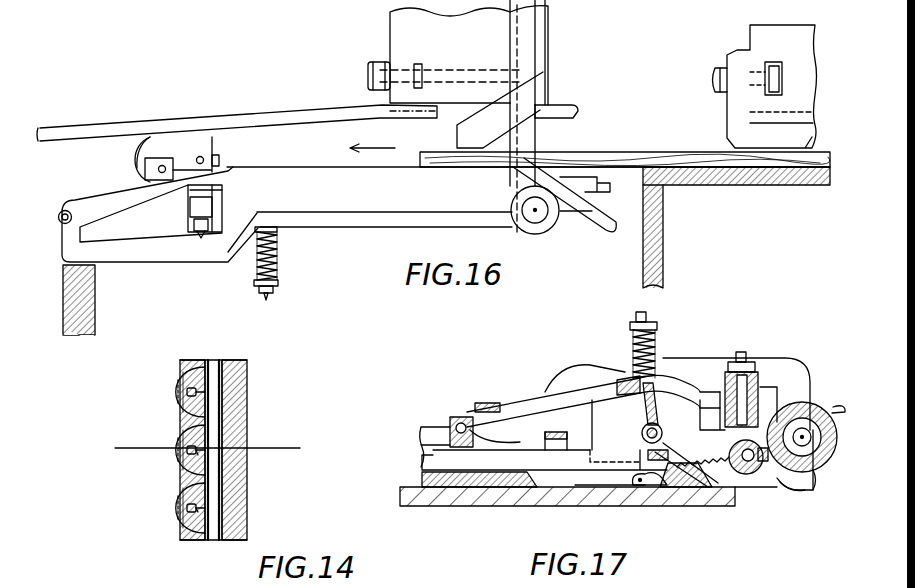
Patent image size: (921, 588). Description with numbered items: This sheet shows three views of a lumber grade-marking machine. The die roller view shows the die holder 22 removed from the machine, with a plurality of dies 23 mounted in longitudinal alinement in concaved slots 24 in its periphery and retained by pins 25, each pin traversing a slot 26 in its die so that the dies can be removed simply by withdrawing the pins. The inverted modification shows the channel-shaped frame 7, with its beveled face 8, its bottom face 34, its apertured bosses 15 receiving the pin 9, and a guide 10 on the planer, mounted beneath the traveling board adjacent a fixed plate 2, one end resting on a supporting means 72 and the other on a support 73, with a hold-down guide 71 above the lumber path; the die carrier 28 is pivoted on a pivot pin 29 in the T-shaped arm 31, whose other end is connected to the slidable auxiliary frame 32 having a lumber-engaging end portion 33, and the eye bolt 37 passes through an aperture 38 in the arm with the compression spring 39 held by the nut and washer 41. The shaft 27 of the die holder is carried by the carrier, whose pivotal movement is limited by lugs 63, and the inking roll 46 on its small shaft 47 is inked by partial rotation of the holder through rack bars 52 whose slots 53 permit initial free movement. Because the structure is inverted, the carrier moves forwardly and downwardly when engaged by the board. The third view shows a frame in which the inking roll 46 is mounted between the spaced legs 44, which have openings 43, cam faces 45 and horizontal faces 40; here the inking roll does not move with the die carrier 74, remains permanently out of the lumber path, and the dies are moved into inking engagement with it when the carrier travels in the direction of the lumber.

In FIG. 16, the frame plate 2 is at (718, 175).
In FIG. 16, the channel-shaped frame 7 is at (378, 200).
In FIG. 17, the channel-shaped frame 7 is at (432, 427).
In FIG. 16, the beveled face 8 is at (565, 170).
In FIG. 16, the pin 9 is at (537, 212).
In FIG. 16, the guide 10 is at (745, 112).
In FIG. 16, the apertured bosses 15 is at (558, 214).
In FIG. 14, the apertured bosses 15 is at (209, 455).
In FIG. 14, the die holder 22 is at (235, 385).
In FIG. 17, the die holder 22 is at (736, 472).
In FIG. 16, the dies 23 is at (220, 158).
In FIG. 14, the dies 23 is at (178, 386).
In FIG. 17, the dies 23 is at (763, 462).
In FIG. 14, the concaved slots 24 is at (200, 360).
In FIG. 14, the pins 25 is at (190, 394).
In FIG. 14, the slot 26 is at (198, 500).
In FIG. 16, the shaft 27 is at (200, 157).
In FIG. 17, the shaft 27 is at (748, 462).
In FIG. 16, the die carrier 28 is at (176, 140).
In FIG. 16, the pivot pin 29 is at (202, 238).
In FIG. 17, the pivot pin 29 is at (742, 362).
In FIG. 16, the T-shaped arm 31 is at (335, 215).
In FIG. 17, the T-shaped arm 31 is at (710, 390).
In FIG. 17, the auxiliary frame 32 is at (503, 437).
In FIG. 17, the lumber-engaging end portion 33 is at (690, 489).
In FIG. 16, the bottom face 34 is at (322, 152).
In FIG. 17, the bottom face 34 is at (472, 490).
In FIG. 16, the eye bolt 37 is at (266, 300).
In FIG. 17, the eye bolt 37 is at (640, 316).
In FIG. 17, the aperture 38 is at (628, 380).
In FIG. 16, the compression spring 39 is at (278, 260).
In FIG. 17, the compression spring 39 is at (660, 342).
In FIG. 16, the horizontal faces 40 is at (192, 192).
In FIG. 16, the nut and washer 41 is at (262, 290).
In FIG. 17, the nut and washer 41 is at (655, 325).
In FIG. 17, the openings 43 is at (770, 388).
In FIG. 16, the spaced legs 44 is at (170, 262).
In FIG. 17, the spaced legs 44 is at (780, 360).
In FIG. 16, the cam face 45 is at (107, 211).
In FIG. 16, the inking roll 46 is at (138, 168).
In FIG. 17, the inking roll 46 is at (812, 482).
In FIG. 16, the small shaft 47 is at (162, 166).
In FIG. 17, the small shaft 47 is at (802, 428).
In FIG. 17, the rack bars 52 is at (648, 487).
In FIG. 17, the slot 53 is at (836, 405).
In FIG. 17, the lugs 63 is at (700, 414).
In FIG. 16, the hold-down guide 71 is at (467, 140).
In FIG. 16, the supporting means 72 is at (505, 52).
In FIG. 16, the support 73 is at (95, 312).
In FIG. 17, the die carrier 74 is at (785, 492).